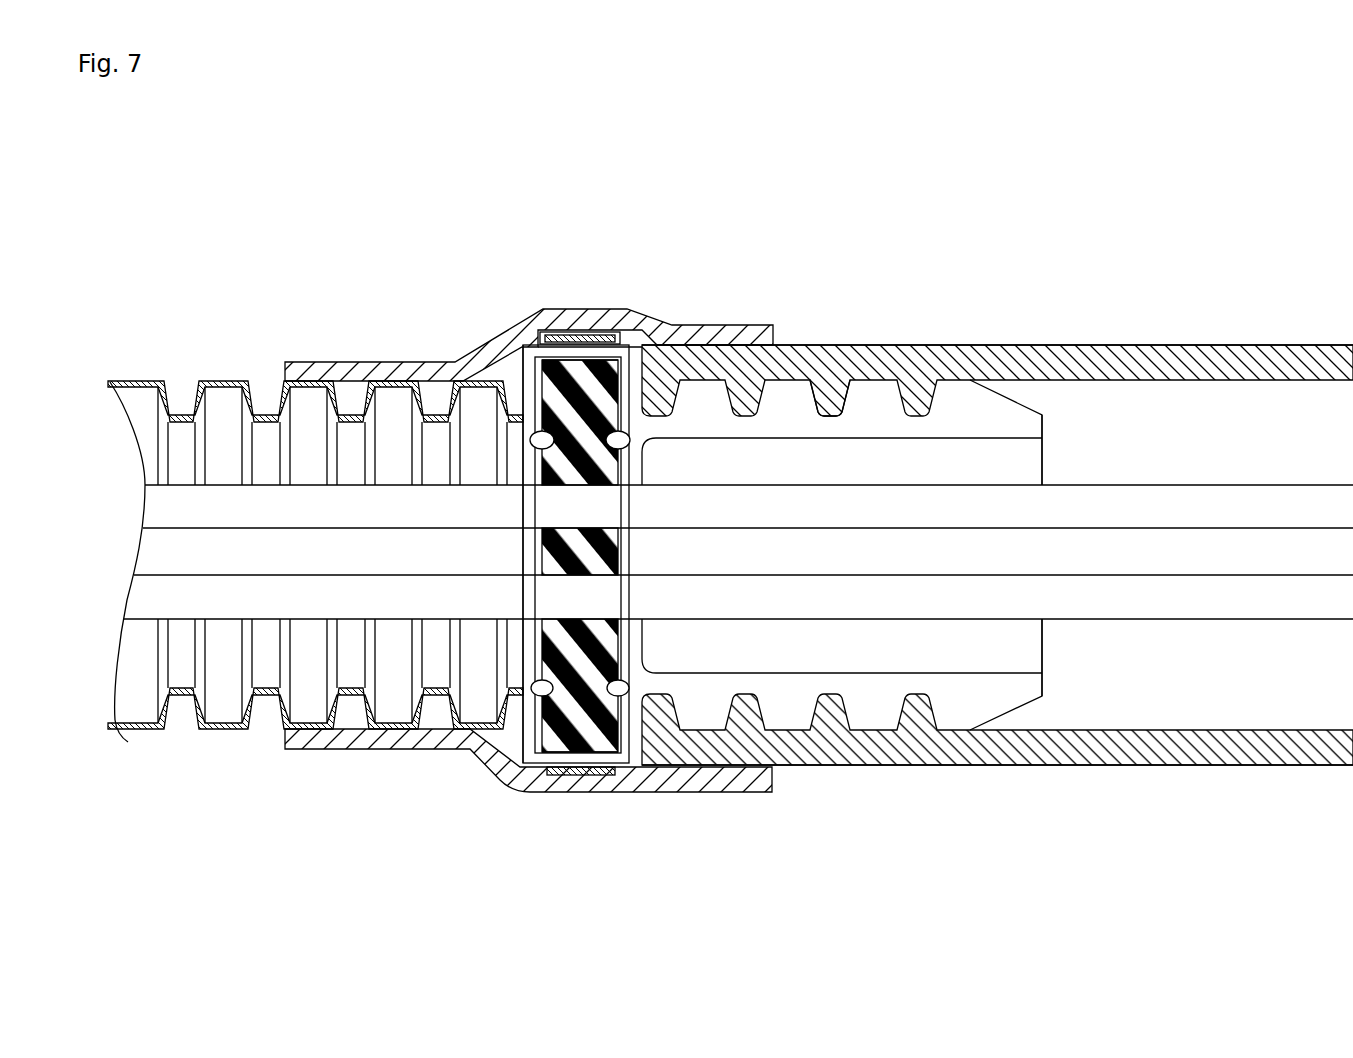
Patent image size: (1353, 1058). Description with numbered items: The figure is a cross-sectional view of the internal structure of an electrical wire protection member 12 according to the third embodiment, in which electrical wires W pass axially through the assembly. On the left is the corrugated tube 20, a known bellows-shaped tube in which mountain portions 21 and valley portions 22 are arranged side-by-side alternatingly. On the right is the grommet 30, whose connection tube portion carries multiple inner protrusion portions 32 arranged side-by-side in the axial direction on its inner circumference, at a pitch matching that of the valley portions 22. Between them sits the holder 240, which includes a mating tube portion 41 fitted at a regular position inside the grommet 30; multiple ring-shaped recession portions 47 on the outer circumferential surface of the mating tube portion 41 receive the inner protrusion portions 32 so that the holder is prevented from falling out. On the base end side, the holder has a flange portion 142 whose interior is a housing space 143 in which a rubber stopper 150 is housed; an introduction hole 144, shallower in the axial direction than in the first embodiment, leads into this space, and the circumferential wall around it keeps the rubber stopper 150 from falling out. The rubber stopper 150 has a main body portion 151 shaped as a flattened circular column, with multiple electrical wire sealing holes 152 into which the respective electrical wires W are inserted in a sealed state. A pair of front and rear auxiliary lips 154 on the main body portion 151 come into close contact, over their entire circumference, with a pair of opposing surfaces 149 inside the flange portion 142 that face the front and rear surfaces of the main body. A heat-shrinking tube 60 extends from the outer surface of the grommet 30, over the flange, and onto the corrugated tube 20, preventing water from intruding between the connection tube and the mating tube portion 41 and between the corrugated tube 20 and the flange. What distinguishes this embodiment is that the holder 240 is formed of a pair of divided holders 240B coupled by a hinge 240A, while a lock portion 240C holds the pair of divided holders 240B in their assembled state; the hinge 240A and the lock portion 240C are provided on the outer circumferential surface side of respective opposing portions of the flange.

The electrical wire protection member 12 is at (757, 260).
The corrugated tube 20 is at (174, 366).
The mountain portions 21 is at (232, 381).
The valley portions 22 is at (262, 415).
The grommet 30 is at (1079, 318).
The inner protrusion portions 32 is at (838, 383).
The mating tube portion 41 is at (1035, 427).
The ring-shaped recession portions 47 is at (830, 414).
The heat-shrinking tube 60 is at (400, 361).
The flange portion 142 is at (603, 337).
The housing space 143 is at (623, 355).
The introduction hole 144 is at (540, 432).
The opposing surfaces 149 is at (452, 425).
The rubber stopper 150 is at (630, 545).
The main body portion 151 is at (615, 642).
The electrical wire sealing holes 152 is at (592, 527).
The auxiliary lips 154 is at (537, 400).
The holder 240 is at (1059, 410).
The hinge 240A is at (583, 772).
The divided holders 240B is at (1045, 547).
The lock portion 240C is at (578, 338).
The electrical wires W is at (1265, 498).